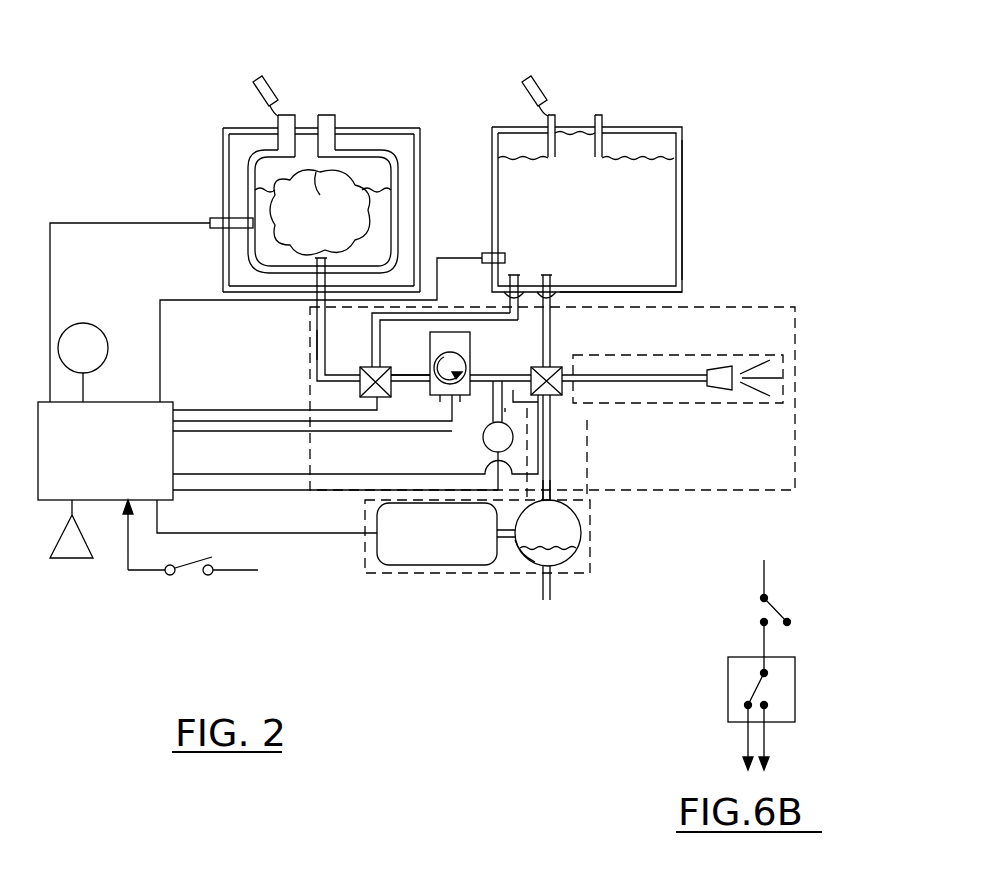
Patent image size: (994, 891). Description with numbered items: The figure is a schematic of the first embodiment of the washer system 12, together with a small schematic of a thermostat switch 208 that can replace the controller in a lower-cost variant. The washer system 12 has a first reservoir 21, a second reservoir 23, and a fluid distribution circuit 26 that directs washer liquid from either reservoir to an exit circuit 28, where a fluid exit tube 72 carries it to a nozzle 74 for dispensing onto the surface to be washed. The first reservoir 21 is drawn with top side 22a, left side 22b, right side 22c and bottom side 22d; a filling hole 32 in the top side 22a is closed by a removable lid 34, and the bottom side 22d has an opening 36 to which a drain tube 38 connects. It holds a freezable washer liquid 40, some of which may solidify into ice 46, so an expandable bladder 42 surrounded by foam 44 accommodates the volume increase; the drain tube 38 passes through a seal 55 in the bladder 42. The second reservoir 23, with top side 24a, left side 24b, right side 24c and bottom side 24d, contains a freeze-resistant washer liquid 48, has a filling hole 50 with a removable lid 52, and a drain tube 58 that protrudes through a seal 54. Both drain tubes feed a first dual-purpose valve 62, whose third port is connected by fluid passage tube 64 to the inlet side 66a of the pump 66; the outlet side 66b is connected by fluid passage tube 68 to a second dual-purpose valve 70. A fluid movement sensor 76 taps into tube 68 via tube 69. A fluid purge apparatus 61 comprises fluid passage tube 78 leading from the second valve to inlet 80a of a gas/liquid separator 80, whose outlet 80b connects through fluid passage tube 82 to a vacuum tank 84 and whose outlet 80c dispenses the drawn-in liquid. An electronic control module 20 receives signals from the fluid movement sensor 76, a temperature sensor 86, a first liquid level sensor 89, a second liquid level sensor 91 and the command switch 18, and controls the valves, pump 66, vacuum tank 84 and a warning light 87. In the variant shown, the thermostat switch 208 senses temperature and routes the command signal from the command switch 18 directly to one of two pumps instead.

In FIG. 2, the washer system 12 is at (812, 121).
In FIG. 2, the command switch 18 is at (188, 575).
In FIG. 6B, the command switch 18 is at (775, 615).
In FIG. 2, the electronic control module 20 is at (113, 402).
In FIG. 2, the first reservoir 21 is at (357, 128).
In FIG. 2, the top side 22a is at (395, 128).
In FIG. 2, the left side 22b is at (222, 162).
In FIG. 2, the right side 22c is at (421, 178).
In FIG. 2, the bottom side 22d is at (245, 296).
In FIG. 2, the second reservoir 23 is at (688, 280).
In FIG. 2, the top side 24a is at (648, 127).
In FIG. 2, the left side 24b is at (493, 138).
In FIG. 2, the right side 24c is at (683, 164).
In FIG. 2, the bottom side 24d is at (633, 300).
In FIG. 2, the fluid distribution circuit 26 is at (797, 325).
In FIG. 2, the exit circuit 28 is at (783, 377).
In FIG. 2, the filling hole 32 is at (291, 82).
In FIG. 2, the removable lid 34 is at (258, 80).
In FIG. 2, the opening 36 is at (317, 293).
In FIG. 2, the drain tube 38 is at (318, 335).
In FIG. 2, the freezable washer liquid 40 is at (252, 258).
In FIG. 2, the expandable bladder 42 is at (272, 158).
In FIG. 2, the foam 44 is at (233, 252).
In FIG. 2, the ice 46 is at (316, 172).
In FIG. 2, the freeze-resistant washer liquid 48 is at (672, 196).
In FIG. 2, the filling hole 50 is at (582, 100).
In FIG. 2, the removable lid 52 is at (530, 80).
In FIG. 2, the seal 54 is at (516, 292).
In FIG. 2, the seal 55 is at (321, 268).
In FIG. 2, the drain tube 58 is at (455, 312).
In FIG. 2, the fluid purge apparatus 61 is at (375, 576).
In FIG. 2, the first dual-purpose valve 62 is at (362, 373).
In FIG. 2, the fluid passage tube 64 is at (410, 363).
In FIG. 2, the pump 66 is at (467, 372).
In FIG. 2, the inlet side 66a is at (428, 383).
In FIG. 2, the outlet side 66b is at (473, 386).
In FIG. 2, the fluid passage tube 68 is at (492, 388).
In FIG. 2, the tube 69 is at (505, 410).
In FIG. 2, the second dual-purpose valve 70 is at (555, 364).
In FIG. 2, the fluid exit tube 72 is at (675, 383).
In FIG. 2, the nozzle 74 is at (730, 370).
In FIG. 2, the fluid movement sensor 76 is at (487, 449).
In FIG. 2, the fluid passage tube 78 is at (550, 463).
In FIG. 2, the gas/liquid separator 80 is at (581, 533).
In FIG. 2, the inlet 80a is at (552, 487).
In FIG. 2, the outlet 80b is at (527, 556).
In FIG. 2, the outlet 80c is at (550, 590).
In FIG. 2, the fluid passage tube 82 is at (512, 541).
In FIG. 2, the vacuum tank 84 is at (428, 565).
In FIG. 2, the temperature sensor 86 is at (83, 323).
In FIG. 2, the warning light 87 is at (72, 558).
In FIG. 2, the first liquid level sensor 89 is at (217, 218).
In FIG. 2, the second liquid level sensor 91 is at (486, 252).
In FIG. 6B, the thermostat switch 208 is at (795, 675).